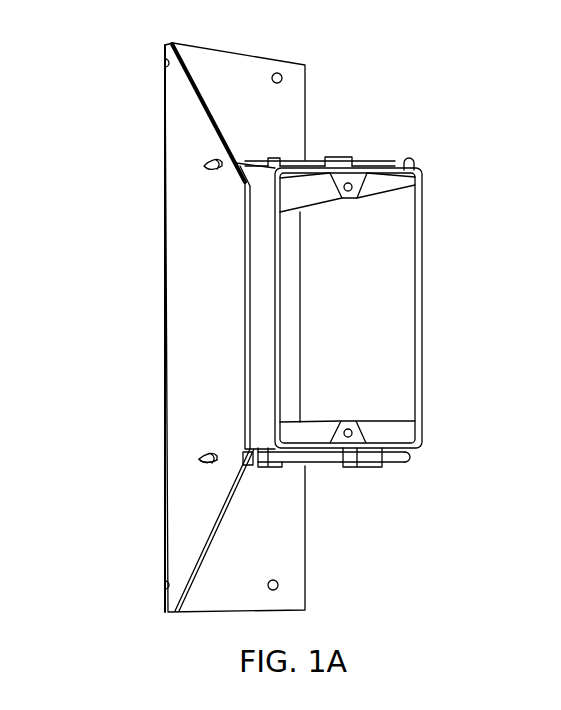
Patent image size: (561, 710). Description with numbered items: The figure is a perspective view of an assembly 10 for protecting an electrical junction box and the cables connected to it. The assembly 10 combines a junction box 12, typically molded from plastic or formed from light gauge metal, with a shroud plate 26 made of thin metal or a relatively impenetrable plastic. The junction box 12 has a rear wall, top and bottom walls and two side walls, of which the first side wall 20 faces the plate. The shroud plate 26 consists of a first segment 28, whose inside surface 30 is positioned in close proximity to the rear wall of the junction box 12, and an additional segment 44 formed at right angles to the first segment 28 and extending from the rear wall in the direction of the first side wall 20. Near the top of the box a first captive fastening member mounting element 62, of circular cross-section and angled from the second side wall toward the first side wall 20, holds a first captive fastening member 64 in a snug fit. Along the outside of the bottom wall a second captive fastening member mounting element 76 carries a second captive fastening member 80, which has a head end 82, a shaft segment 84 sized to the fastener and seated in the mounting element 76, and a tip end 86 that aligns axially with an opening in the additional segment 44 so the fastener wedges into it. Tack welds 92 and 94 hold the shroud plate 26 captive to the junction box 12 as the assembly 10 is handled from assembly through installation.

The assembly 10 is at (57, 104).
The junction box 12 is at (350, 281).
The first side wall 20 is at (258, 290).
The shroud plate 26 is at (160, 357).
The first segment 28 is at (308, 77).
The inside surface 30 is at (208, 58).
The additional segment 44 is at (173, 122).
The first captive fastening member mounting element 62 is at (273, 161).
The first captive fastening member 64 is at (408, 160).
The second captive fastening member mounting element 76 is at (267, 467).
The second captive fastening member 80 is at (354, 496).
The head end 82 is at (412, 458).
The shaft segment 84 is at (310, 463).
The tip end 86 is at (208, 452).
The tack weld 92 is at (216, 171).
The tack weld 94 is at (210, 465).